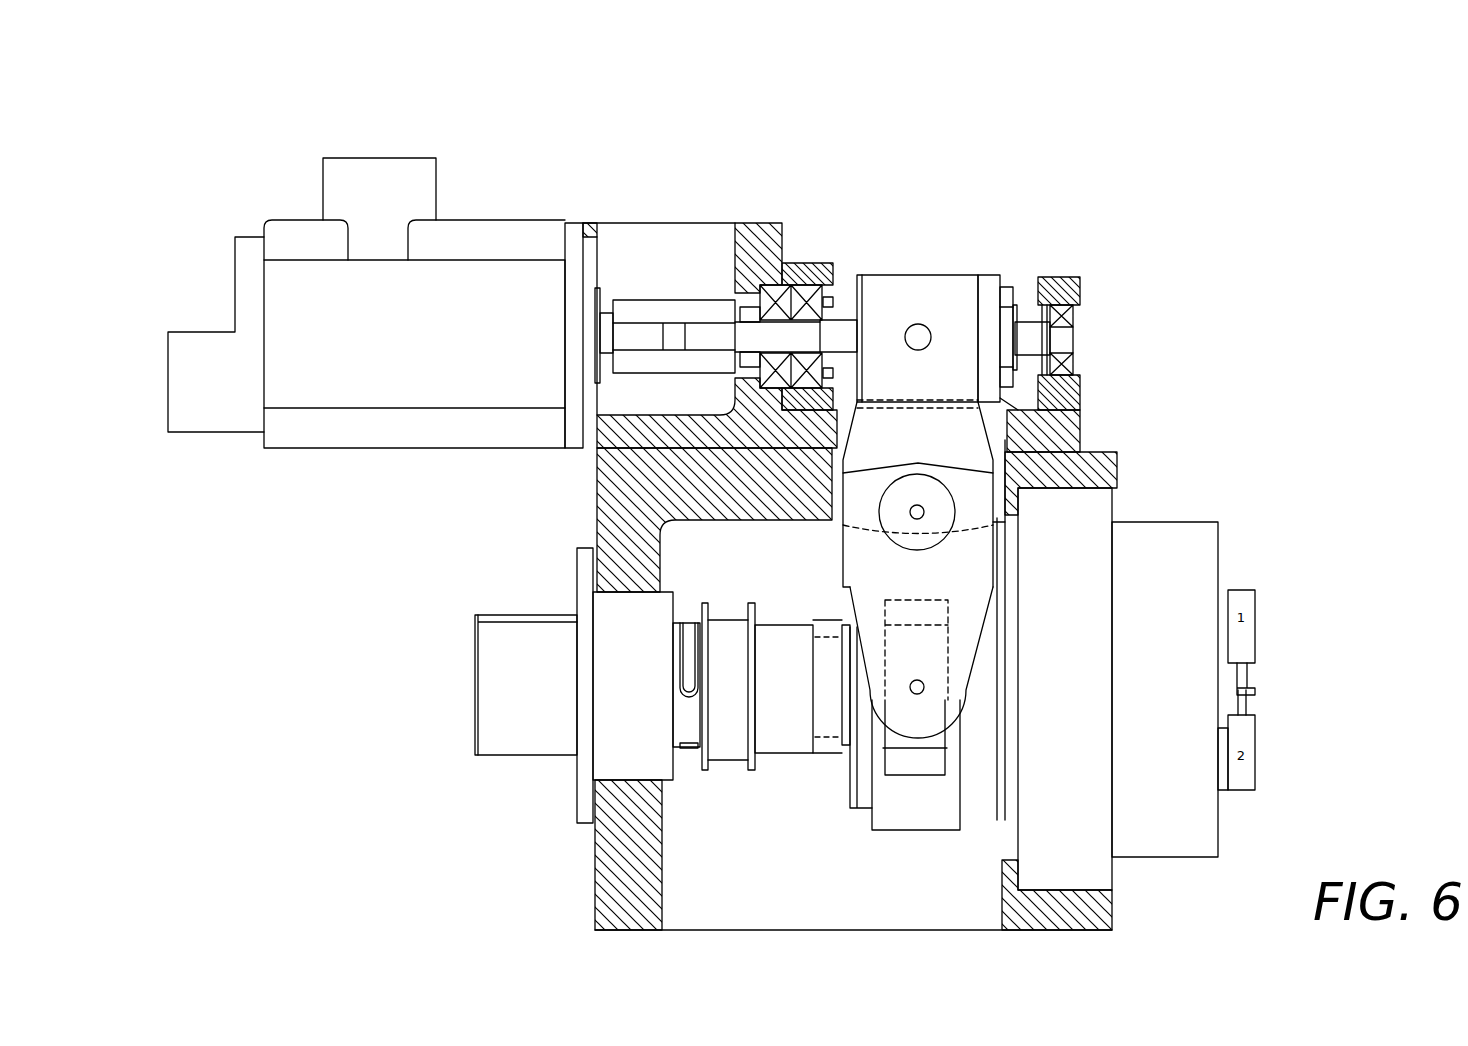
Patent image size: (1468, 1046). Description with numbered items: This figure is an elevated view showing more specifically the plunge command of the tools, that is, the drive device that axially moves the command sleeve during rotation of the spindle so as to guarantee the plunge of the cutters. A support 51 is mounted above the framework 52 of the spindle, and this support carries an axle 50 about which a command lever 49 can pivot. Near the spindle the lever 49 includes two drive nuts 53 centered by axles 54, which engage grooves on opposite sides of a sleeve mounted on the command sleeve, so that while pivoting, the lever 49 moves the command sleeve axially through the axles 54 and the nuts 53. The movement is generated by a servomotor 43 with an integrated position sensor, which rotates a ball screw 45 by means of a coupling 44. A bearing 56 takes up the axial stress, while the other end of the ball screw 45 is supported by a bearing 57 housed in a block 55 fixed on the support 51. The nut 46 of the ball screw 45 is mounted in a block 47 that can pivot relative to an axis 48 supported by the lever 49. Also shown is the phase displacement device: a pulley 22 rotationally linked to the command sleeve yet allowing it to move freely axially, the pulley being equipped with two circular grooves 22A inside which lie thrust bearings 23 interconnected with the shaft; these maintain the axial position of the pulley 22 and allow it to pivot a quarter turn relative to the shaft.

The servomotor 43 is at (503, 297).
The coupling 44 is at (633, 310).
The support 51 is at (760, 268).
The bearing 56 is at (792, 303).
The axis 48 is at (918, 330).
The block 47 is at (993, 307).
The nut 46 is at (1017, 316).
The ball screw 45 is at (1025, 335).
The bearing 57 is at (1080, 280).
The block 55 is at (1063, 400).
The axle 50 is at (924, 510).
The axle 54 is at (924, 685).
The drive nut 53 is at (935, 743).
The framework 52 is at (633, 482).
The command lever 49 is at (882, 560).
The thrust bearing 23 is at (693, 630).
The circular groove 22A is at (690, 687).
The pulley 22 is at (690, 718).